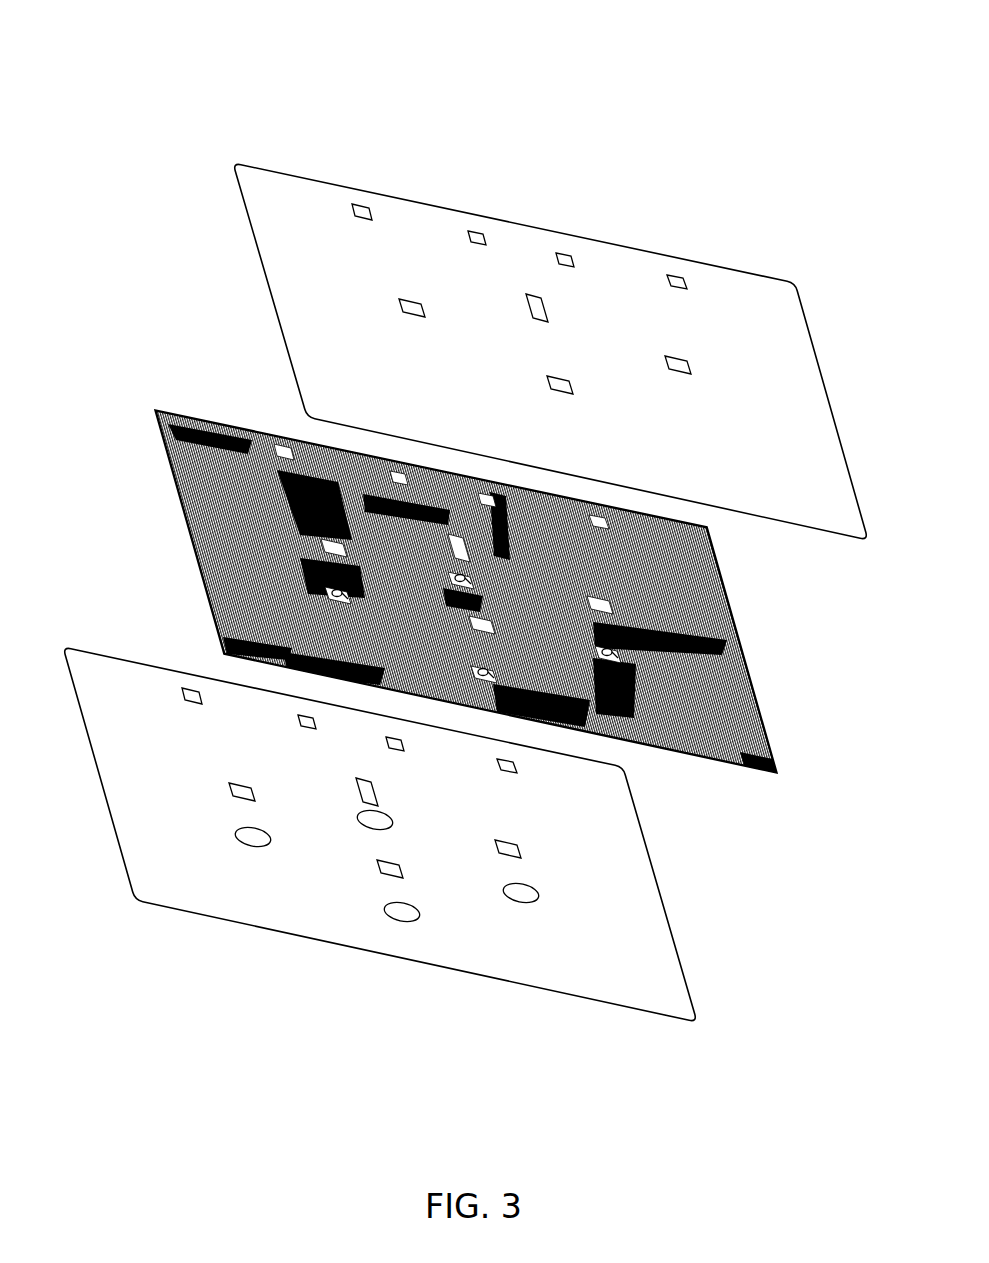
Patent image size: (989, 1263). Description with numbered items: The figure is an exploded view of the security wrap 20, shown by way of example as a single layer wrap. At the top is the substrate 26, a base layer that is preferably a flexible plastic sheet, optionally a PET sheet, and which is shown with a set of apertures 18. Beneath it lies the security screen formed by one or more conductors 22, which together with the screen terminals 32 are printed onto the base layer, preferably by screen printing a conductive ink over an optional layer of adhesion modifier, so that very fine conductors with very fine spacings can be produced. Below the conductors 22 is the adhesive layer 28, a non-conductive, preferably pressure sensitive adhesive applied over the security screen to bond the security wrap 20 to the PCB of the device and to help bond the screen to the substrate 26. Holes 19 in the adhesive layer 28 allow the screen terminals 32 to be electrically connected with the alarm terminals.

The apertures 18 is at (477, 231).
The holes 19 is at (253, 840).
The security wrap 20 is at (168, 124).
The conductor 22 is at (165, 502).
The substrate 26 is at (245, 286).
The adhesive layer 28 is at (170, 927).
The screen terminals 32 is at (480, 672).